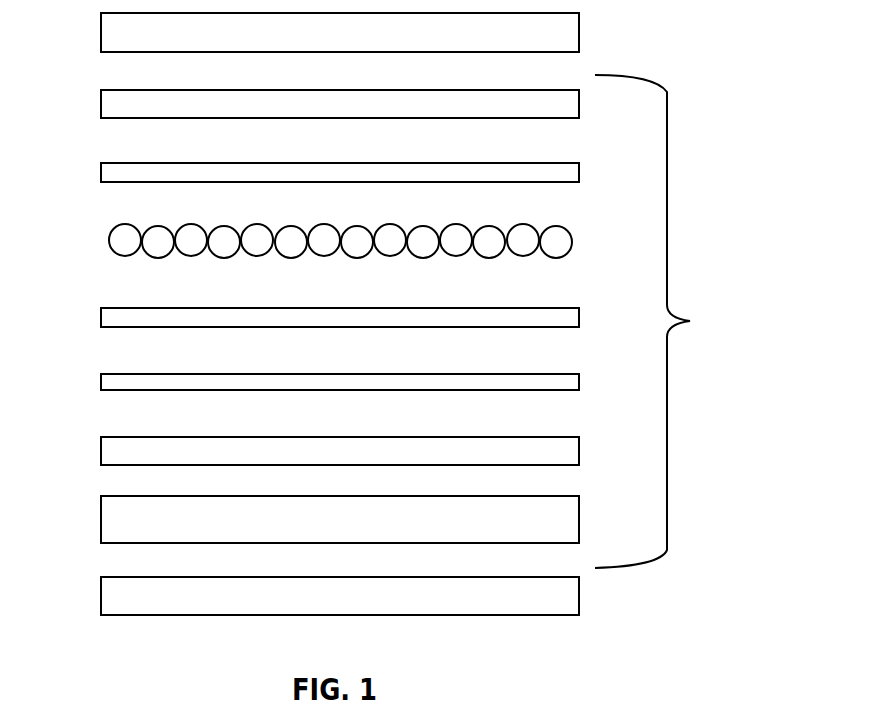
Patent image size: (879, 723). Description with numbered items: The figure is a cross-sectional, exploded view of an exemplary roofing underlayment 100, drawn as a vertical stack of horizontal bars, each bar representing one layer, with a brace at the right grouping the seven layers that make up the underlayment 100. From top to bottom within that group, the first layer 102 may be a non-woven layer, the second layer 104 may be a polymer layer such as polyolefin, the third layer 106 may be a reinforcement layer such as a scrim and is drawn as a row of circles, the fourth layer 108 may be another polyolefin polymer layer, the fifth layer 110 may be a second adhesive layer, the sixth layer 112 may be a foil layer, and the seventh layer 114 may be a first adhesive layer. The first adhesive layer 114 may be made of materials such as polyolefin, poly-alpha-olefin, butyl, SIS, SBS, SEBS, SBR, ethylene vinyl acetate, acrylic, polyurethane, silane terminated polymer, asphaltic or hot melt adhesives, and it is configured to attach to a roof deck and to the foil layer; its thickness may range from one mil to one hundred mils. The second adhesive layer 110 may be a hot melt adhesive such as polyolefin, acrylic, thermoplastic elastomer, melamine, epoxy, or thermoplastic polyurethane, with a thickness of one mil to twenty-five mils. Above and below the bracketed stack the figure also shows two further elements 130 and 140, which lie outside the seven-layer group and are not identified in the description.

The underlayment 100 is at (690, 321).
The first layer 102 is at (303, 103).
The second layer 104 is at (303, 173).
The third layer 106 is at (300, 241).
The fourth layer 108 is at (303, 316).
The fifth layer 110 is at (303, 380).
The sixth layer 112 is at (303, 452).
The seventh layer 114 is at (303, 519).
The top substrate 130 is at (303, 32).
The bottom substrate 140 is at (303, 596).